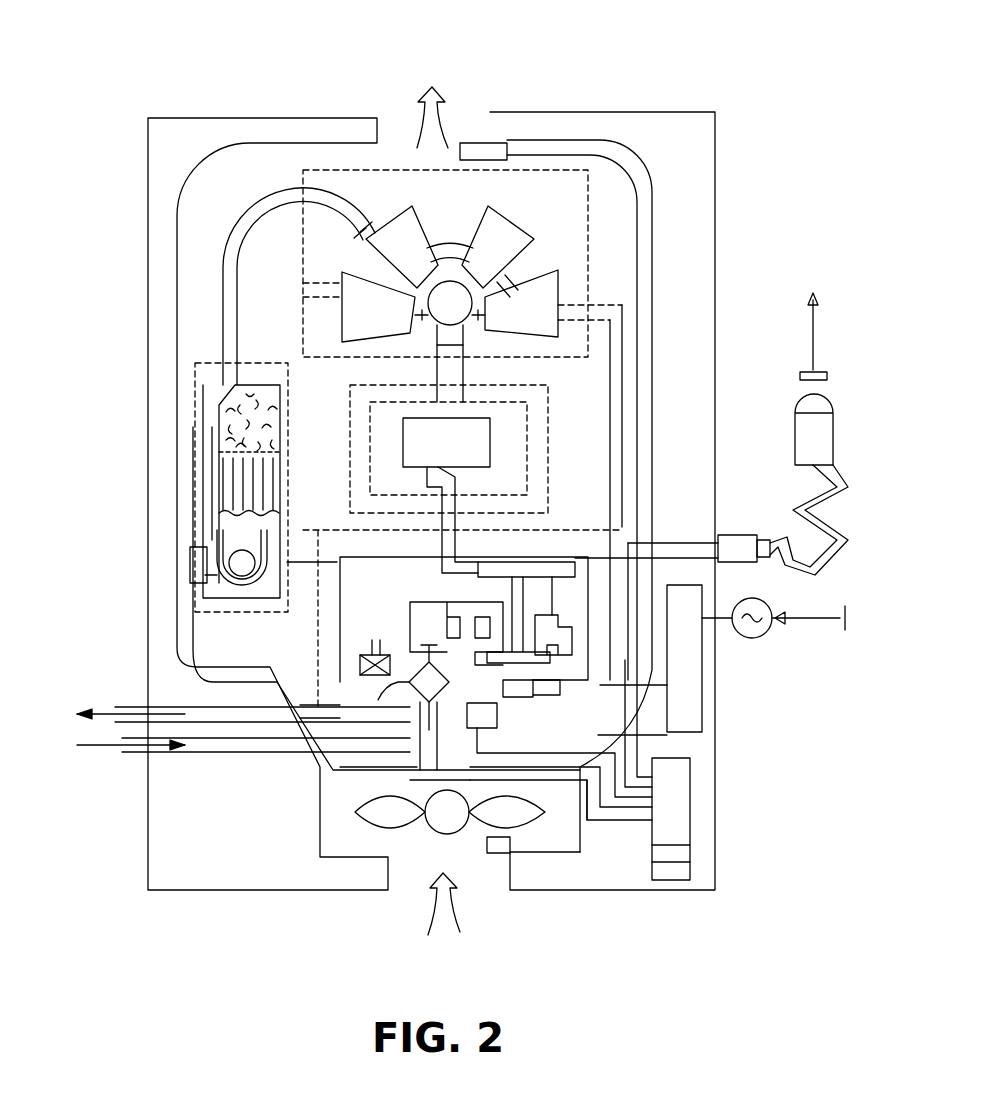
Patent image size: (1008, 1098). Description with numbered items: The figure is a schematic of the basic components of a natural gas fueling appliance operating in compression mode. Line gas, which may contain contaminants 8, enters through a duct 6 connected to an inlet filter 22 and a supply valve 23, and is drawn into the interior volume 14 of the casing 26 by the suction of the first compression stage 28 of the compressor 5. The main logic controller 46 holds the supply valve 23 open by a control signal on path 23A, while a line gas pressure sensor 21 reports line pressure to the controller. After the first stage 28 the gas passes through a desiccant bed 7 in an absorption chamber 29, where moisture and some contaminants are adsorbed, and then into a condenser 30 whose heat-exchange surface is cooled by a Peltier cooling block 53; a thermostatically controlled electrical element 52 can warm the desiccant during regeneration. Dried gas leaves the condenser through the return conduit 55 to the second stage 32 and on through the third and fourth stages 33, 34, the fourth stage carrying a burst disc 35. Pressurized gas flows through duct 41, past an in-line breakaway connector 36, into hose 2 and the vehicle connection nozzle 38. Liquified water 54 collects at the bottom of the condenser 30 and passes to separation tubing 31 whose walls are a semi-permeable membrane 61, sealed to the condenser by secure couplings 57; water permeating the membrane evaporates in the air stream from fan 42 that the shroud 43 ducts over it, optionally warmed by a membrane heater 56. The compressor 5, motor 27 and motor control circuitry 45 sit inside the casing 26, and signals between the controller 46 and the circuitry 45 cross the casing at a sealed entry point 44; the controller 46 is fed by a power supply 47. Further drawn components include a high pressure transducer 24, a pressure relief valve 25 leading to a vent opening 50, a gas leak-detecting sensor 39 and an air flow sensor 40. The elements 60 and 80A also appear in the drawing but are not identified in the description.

The hose 2 is at (835, 545).
The compressor 5 is at (452, 240).
The duct 6 is at (247, 753).
The desiccant bed 7 is at (273, 430).
The contaminants 8 is at (97, 757).
The interior volume 14 is at (405, 548).
The line gas pressure sensor 21 is at (483, 715).
The inlet filter 22 is at (440, 700).
The supply valve 23 is at (318, 685).
The control signal path 23A is at (590, 822).
The high pressure transducer 24 is at (562, 618).
The pressure relief valve 25 is at (372, 648).
The casing 26 is at (527, 445).
The motor 27 is at (415, 445).
The first compression stage 28 is at (362, 297).
The absorption chamber 29 is at (212, 438).
The condenser 30 is at (203, 490).
The tubing 31 is at (218, 578).
The second compression stage 32 is at (403, 237).
The third compression stage 33 is at (490, 233).
The fourth compression stage 34 is at (547, 290).
The burst disc 35 is at (468, 345).
The in-line breakaway connector 36 is at (735, 548).
The nozzle 38 is at (805, 432).
The gas leak-detecting sensor 39 is at (462, 142).
The air flow sensor 40 is at (499, 853).
The duct 41 is at (640, 357).
The fan 42 is at (372, 815).
The shroud 43 is at (153, 250).
The sealed entry point 44 is at (517, 687).
The motor control circuitry 45 is at (556, 560).
The main logic controller 46 is at (680, 820).
The power supply 47 is at (685, 680).
The vent opening 50 is at (140, 706).
The thermostatically controlled electrical element 52 is at (287, 402).
The cooling block 53 is at (275, 487).
The liquified water 54 is at (212, 520).
The return conduit 55 is at (228, 320).
The membrane heater 56 is at (300, 563).
The secure couplings 57 is at (260, 528).
The air flow 60 is at (431, 85).
The semi-permeable membrane 61 is at (240, 583).
The sensor 80A is at (198, 555).